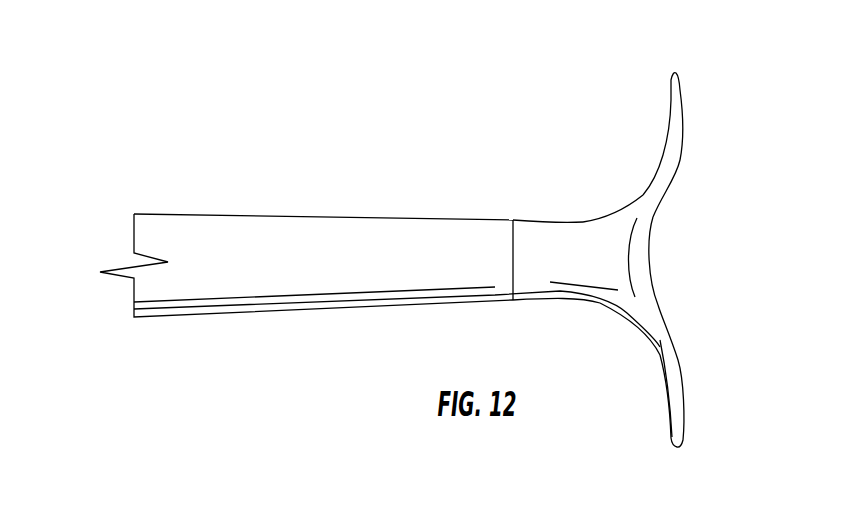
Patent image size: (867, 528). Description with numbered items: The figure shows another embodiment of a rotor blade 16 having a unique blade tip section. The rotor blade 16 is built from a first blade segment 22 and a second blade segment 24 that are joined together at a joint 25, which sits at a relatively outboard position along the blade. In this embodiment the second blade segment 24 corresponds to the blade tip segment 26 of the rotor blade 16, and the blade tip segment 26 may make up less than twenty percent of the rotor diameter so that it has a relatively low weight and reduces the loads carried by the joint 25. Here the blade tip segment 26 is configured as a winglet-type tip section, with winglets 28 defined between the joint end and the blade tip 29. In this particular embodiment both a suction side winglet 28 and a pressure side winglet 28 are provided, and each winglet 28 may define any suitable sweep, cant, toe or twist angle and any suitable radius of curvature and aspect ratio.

The rotor blade 16 is at (328, 111).
The first blade segment 22 is at (343, 213).
The second blade segment 24 is at (617, 209).
The joint 25 is at (513, 263).
The blade tip segment 26 is at (545, 233).
The winglet 28 is at (679, 167).
The blade tip 29 is at (673, 72).